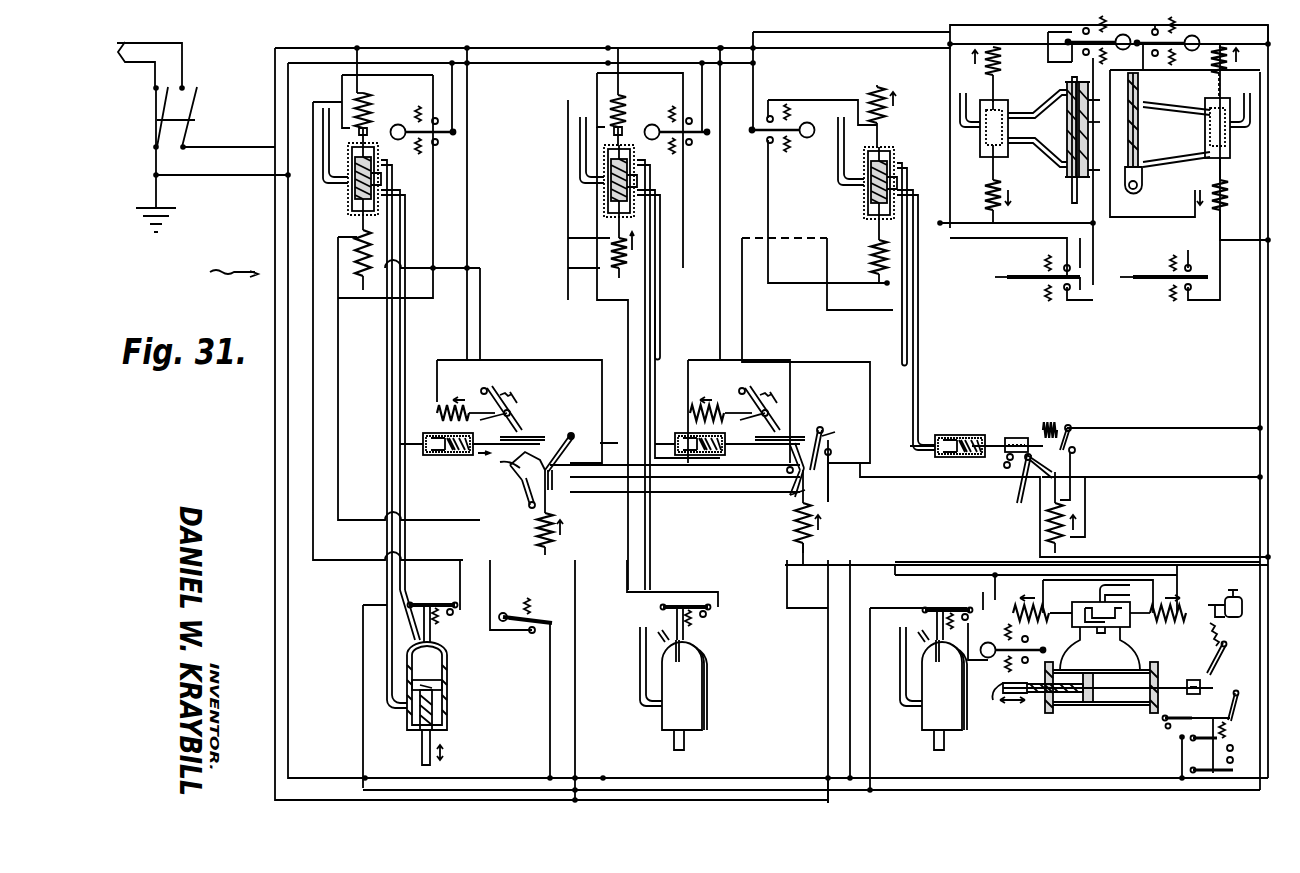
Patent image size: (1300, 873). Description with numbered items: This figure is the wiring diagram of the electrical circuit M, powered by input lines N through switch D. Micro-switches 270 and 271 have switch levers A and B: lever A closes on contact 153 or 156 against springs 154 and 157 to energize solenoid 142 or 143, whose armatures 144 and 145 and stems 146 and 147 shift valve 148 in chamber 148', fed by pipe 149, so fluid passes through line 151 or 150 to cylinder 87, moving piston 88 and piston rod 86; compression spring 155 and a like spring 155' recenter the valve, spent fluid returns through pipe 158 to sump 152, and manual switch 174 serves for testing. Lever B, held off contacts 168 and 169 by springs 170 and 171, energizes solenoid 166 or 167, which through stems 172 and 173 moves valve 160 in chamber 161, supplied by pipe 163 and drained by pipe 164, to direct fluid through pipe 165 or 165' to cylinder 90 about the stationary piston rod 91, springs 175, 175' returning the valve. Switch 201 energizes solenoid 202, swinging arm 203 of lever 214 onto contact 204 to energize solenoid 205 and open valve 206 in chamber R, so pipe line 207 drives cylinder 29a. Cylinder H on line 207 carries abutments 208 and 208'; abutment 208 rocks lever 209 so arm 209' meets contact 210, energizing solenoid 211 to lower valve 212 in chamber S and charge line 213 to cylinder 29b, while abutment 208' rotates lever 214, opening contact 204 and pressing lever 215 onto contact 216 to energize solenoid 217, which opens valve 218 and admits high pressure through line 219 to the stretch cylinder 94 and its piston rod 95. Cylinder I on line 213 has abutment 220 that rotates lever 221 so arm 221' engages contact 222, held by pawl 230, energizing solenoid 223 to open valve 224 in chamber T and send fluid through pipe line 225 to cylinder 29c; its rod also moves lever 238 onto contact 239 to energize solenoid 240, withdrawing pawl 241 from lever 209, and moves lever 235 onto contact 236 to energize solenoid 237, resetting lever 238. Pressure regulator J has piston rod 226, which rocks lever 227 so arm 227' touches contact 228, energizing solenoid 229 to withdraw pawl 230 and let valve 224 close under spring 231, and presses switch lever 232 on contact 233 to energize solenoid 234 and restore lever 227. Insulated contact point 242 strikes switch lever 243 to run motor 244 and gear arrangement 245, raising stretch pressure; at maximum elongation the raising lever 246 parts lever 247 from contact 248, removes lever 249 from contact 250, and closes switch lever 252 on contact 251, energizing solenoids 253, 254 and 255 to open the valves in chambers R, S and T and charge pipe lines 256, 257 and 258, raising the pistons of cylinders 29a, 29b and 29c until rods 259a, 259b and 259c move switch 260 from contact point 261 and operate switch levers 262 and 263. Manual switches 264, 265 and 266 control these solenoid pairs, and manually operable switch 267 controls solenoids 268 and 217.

The supply terminal N is at (192, 137).
The main switch D is at (180, 120).
The direction of motion M is at (220, 274).
The relay R is at (380, 150).
The relay S is at (635, 150).
The relay T is at (895, 155).
The cylinder H is at (435, 455).
The cylinder I is at (688, 425).
The cylinder J is at (960, 425).
The switch A is at (1022, 272).
The switch B is at (1150, 272).
The spring 253 is at (372, 110).
The switch 264 is at (400, 124).
The pipe 206 is at (333, 155).
The spring 205 is at (372, 278).
The pipe 256 is at (387, 338).
The pipe 207 is at (410, 330).
The spring 254 is at (630, 108).
The switch 265 is at (653, 124).
The pipe 212 is at (606, 197).
The spring 211 is at (612, 250).
The pipe 257 is at (645, 330).
The pipe 213 is at (662, 330).
The spring 255 is at (885, 108).
The switch 266 is at (809, 123).
The relay contacts 231 is at (870, 205).
The pipe 224 is at (870, 190).
The spring 223 is at (872, 263).
The pipe 258 is at (902, 338).
The pipe 225 is at (920, 355).
The spring 142 is at (1005, 55).
The rod 144 is at (1000, 75).
The valve body 146 is at (1005, 92).
The valve piston 150 is at (1010, 112).
The port 148' is at (1039, 112).
The port 158 is at (1012, 132).
The pipe 155 is at (971, 100).
The port 149 is at (984, 140).
The port 148 is at (970, 160).
The pipe 155' is at (971, 173).
The rod 145 is at (990, 180).
The spring 143 is at (990, 200).
The port 151 is at (1005, 150).
The pipe 147 is at (1022, 172).
The diaphragm 86 is at (1073, 190).
The pipe 87 is at (1068, 178).
The pipe 88 is at (1099, 121).
The switch 152 is at (1130, 30).
The switch 166 is at (1200, 42).
The rod 174 is at (1205, 50).
The rod 175 is at (1204, 79).
The spring 172 is at (1226, 82).
The valve body 161 is at (1205, 108).
The pipe 163 is at (1232, 140).
The spring 173 is at (1226, 175).
The rod 175' is at (1204, 173).
The wire 167 is at (1220, 215).
The diaphragm 90 is at (1140, 95).
The diaphragm stem 91 is at (1142, 148).
The pipe 165' is at (1167, 112).
The port 164 is at (1205, 126).
The port 160 is at (1205, 138).
The pipe 165 is at (1163, 171).
The resistor 157 is at (1050, 257).
The contact 153 is at (1070, 265).
The resistor 154 is at (1045, 293).
The contact 156 is at (1067, 292).
The resistor 170 is at (1177, 258).
The contact 168 is at (1192, 267).
The resistor 171 is at (1170, 291).
The contact 169 is at (1190, 292).
The direction arrow 270 is at (997, 313).
The direction arrow 271 is at (1150, 325).
The spring 240 is at (437, 409).
The rod 241 is at (488, 417).
The lever 209 is at (524, 409).
The spring 209' is at (529, 383).
The pivot 210 is at (490, 390).
The piston rod 208 is at (530, 428).
The rod end 208' is at (477, 462).
The lever 215 is at (580, 443).
The link 216 is at (580, 472).
The link 214 is at (492, 474).
The lever 203 is at (512, 480).
The link 204 is at (528, 508).
The spring 202 is at (540, 533).
The spring 229 is at (718, 395).
The lever 222 is at (755, 388).
The spring 221' is at (788, 397).
The lever 221 is at (827, 434).
The rod 230 is at (737, 424).
The piston rod 220 is at (780, 450).
The contact 235 is at (838, 425).
The contact 239 is at (787, 470).
The contact 238 is at (790, 487).
The wire 236 is at (848, 477).
The spring 237 is at (812, 535).
The contact block 226 is at (1005, 453).
The contact 228 is at (1003, 467).
The lever 227 is at (1022, 478).
The lever arm 227' is at (1009, 518).
The switch 232 is at (1072, 437).
The contact 233 is at (1076, 452).
The spring 234 is at (1070, 532).
The switch 260 is at (438, 600).
The contact 261 is at (452, 610).
The pipe 259a is at (420, 620).
The cylinder 29a is at (450, 672).
The switch 201 is at (518, 608).
The switch 262 is at (682, 602).
The pipe 259b is at (672, 630).
The cylinder 29b is at (705, 657).
The switch 263 is at (962, 606).
The pipe 259c is at (932, 630).
The cylinder 29c is at (922, 722).
The switch 267 is at (989, 643).
The spring 268 is at (1013, 608).
The valve 218 is at (1092, 605).
The bell 219 is at (1085, 648).
The spring 217 is at (1178, 618).
The cylinder 94 is at (1085, 712).
The piston rod 95 is at (1005, 701).
The solenoid 245 is at (1235, 585).
The spring 244 is at (1229, 633).
The lever 243 is at (1218, 667).
The switch 242 is at (1205, 692).
The lever 246 is at (1245, 690).
The contact arm 247 is at (1165, 718).
The contact 248 is at (1166, 730).
The contact arm 249 is at (1190, 740).
The contact 250 is at (1238, 742).
The contact arm 251 is at (1192, 769).
The wire 252 is at (1220, 773).